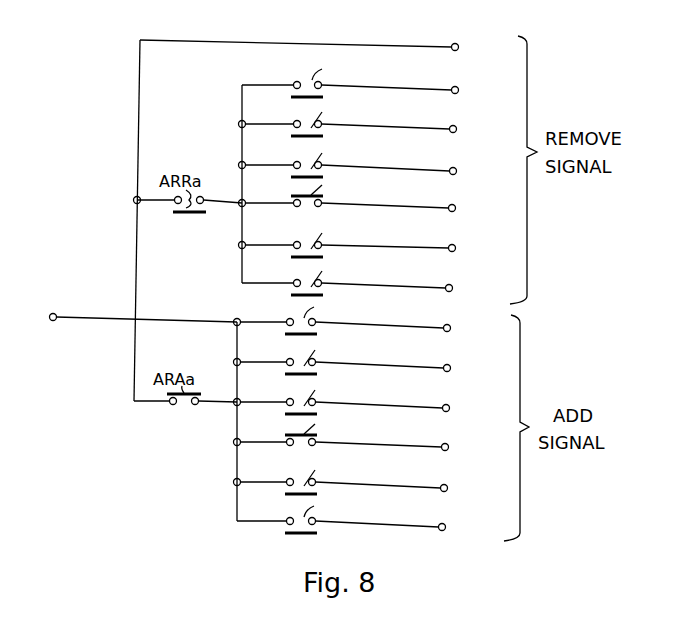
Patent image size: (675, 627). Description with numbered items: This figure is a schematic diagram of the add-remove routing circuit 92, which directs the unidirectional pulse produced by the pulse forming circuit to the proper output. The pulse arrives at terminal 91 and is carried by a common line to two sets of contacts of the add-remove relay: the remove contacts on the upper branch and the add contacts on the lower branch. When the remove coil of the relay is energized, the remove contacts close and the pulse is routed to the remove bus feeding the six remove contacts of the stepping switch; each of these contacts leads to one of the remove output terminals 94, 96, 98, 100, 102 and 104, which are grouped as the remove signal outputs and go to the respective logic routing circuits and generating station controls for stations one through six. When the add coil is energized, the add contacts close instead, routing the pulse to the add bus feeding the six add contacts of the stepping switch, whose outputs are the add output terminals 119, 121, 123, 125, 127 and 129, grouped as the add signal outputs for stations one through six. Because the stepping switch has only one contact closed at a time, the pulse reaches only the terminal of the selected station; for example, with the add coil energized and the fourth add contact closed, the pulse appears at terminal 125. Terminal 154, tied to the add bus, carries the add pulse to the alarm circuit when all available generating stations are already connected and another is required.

The add-remove routing circuit 92 is at (354, 17).
The terminal 91 is at (459, 48).
The output terminal 94 is at (459, 91).
The output terminal 96 is at (457, 130).
The output terminal 98 is at (457, 172).
The output terminal 100 is at (456, 209).
The output terminal 102 is at (456, 249).
The output terminal 104 is at (453, 289).
The terminal 154 is at (57, 313).
The output terminal 119 is at (451, 328).
The output terminal 121 is at (451, 368).
The output terminal 123 is at (450, 408).
The output terminal 125 is at (449, 448).
The output terminal 127 is at (448, 489).
The output terminal 129 is at (446, 528).